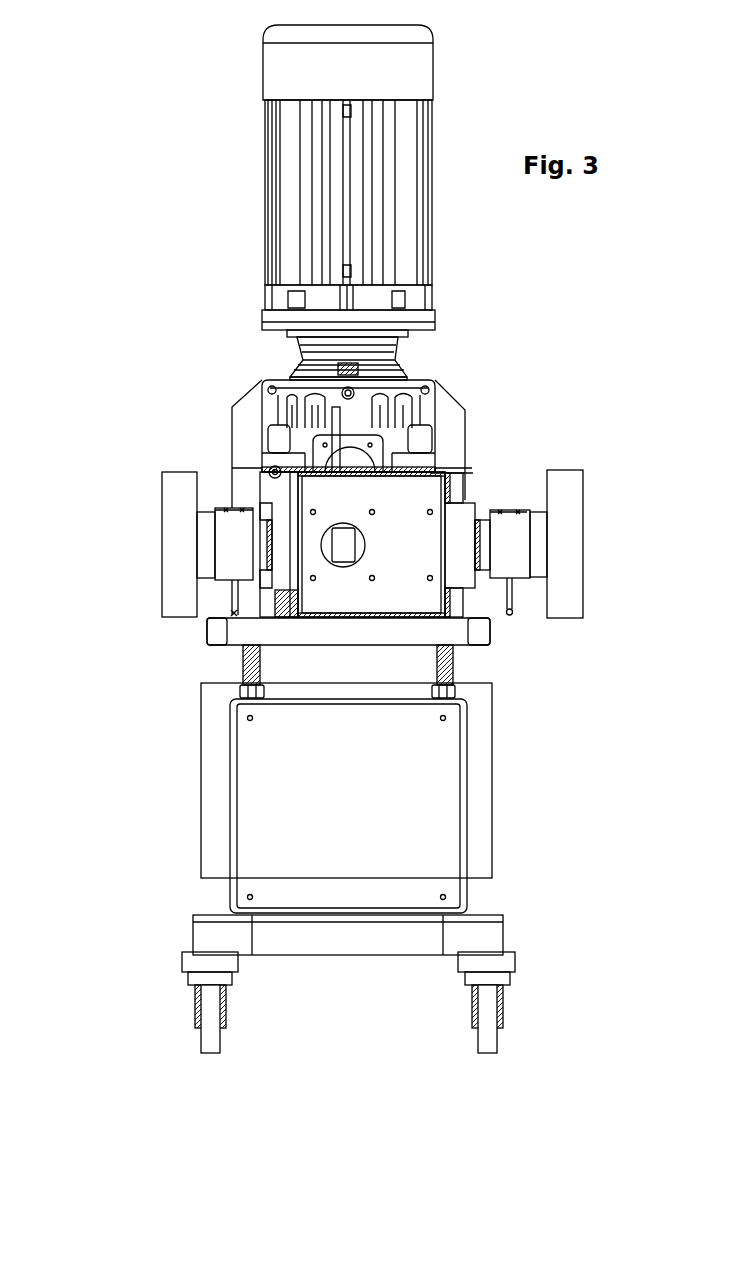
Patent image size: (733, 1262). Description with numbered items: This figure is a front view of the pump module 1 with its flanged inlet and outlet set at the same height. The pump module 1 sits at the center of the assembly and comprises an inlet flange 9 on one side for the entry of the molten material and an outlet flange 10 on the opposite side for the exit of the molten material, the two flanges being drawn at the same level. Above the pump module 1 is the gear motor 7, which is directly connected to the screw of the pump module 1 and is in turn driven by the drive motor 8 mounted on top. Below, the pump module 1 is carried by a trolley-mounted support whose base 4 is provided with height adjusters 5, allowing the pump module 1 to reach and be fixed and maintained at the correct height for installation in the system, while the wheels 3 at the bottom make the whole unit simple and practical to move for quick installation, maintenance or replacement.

The pump module 1 is at (407, 553).
The wheels 3 is at (210, 1040).
The base 4 is at (265, 770).
The height adjusters 5 is at (242, 670).
The gear motor 7 is at (305, 423).
The drive motor 8 is at (290, 76).
The inlet flange 9 is at (573, 543).
The outlet flange 10 is at (175, 545).